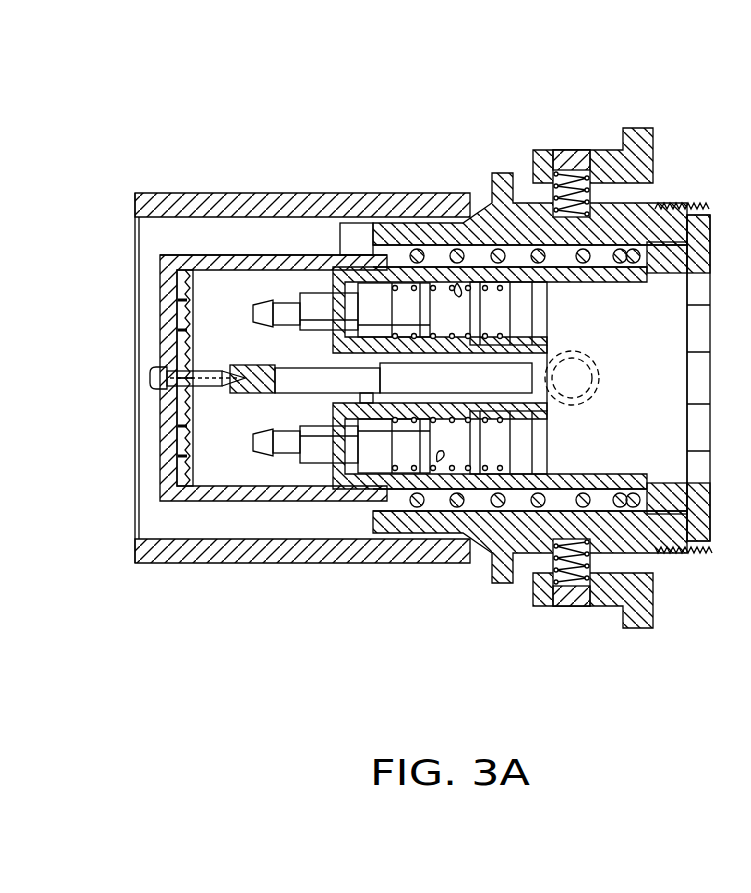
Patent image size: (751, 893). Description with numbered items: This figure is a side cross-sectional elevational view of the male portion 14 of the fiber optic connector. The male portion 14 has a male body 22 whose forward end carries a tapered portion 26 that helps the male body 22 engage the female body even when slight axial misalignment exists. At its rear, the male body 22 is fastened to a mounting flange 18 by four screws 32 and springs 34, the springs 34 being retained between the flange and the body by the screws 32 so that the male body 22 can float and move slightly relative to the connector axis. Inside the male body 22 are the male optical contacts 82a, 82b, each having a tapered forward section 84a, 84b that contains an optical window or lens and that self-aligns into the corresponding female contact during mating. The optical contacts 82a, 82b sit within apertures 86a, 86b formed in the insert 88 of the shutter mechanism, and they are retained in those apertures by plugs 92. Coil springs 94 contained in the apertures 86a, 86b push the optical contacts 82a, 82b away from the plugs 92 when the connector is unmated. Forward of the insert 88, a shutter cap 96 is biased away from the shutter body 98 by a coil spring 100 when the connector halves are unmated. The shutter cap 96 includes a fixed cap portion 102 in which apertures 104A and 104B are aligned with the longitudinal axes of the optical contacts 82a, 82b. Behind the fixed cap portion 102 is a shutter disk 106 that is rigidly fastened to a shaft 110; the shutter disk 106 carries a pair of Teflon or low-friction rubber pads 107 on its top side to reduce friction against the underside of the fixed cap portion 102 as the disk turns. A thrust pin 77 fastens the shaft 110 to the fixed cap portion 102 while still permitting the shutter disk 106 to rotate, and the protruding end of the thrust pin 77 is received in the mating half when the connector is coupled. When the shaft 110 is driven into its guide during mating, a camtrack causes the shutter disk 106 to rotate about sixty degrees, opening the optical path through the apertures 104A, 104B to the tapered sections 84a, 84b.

The male portion 14 is at (346, 138).
The mounting flange 18 is at (641, 128).
The male body 22 is at (372, 193).
The tapered portion 26 is at (140, 193).
The screws 32 is at (572, 165).
The springs 34 is at (585, 196).
The thrust pin 77 is at (155, 378).
The male optical contact 82a is at (320, 325).
The male optical contact 82b is at (318, 436).
The tapered forward section 84a is at (263, 302).
The tapered forward section 84b is at (268, 462).
The aperture 86a is at (475, 312).
The aperture 86b is at (470, 452).
The insert 88 is at (532, 413).
The plugs 92 is at (545, 325).
The coil springs 94 is at (457, 283).
The shutter cap 96 is at (235, 255).
The shutter body 98 is at (421, 215).
The coil spring 100 is at (472, 512).
The fixed cap portion 102 is at (160, 265).
The aperture 104A is at (163, 302).
The aperture 104B is at (168, 440).
The shutter disk 106 is at (140, 558).
The low friction pads 107 is at (163, 320).
The shaft 110 is at (237, 368).